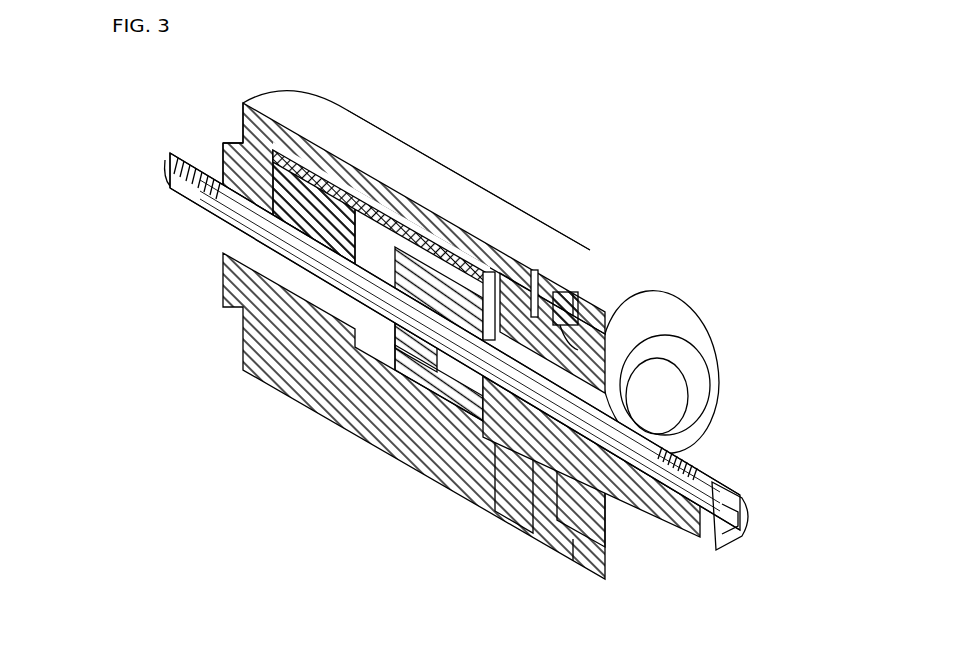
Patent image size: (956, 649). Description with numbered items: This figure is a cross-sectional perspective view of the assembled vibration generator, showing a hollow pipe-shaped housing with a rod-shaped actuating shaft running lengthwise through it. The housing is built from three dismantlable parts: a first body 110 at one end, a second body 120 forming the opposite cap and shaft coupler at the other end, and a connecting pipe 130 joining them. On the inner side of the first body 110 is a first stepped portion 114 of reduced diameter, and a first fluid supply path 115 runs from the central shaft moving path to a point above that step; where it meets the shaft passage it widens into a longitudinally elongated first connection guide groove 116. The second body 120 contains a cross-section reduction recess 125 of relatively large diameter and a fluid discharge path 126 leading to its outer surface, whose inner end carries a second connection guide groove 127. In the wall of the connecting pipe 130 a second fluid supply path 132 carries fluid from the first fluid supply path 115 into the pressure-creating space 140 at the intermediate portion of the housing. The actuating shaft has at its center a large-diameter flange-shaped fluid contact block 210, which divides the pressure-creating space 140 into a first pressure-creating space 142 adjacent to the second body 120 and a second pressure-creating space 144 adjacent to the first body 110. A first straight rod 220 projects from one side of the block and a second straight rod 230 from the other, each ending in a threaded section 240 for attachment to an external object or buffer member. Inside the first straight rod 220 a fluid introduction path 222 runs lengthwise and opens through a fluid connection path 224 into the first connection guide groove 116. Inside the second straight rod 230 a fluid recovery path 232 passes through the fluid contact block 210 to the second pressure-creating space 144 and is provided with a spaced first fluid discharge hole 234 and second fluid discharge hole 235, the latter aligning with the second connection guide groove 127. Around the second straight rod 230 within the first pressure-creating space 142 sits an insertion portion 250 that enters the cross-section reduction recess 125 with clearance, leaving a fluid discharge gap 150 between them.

The first body 110 is at (323, 100).
The first stepped portion 114 is at (313, 407).
The first fluid supply path 115 is at (262, 158).
The first connection guide groove 116 is at (228, 183).
The second body 120 is at (628, 288).
The cross-section reduction recess 125 is at (540, 270).
The fluid discharge path 126 is at (568, 285).
The second connection guide groove 127 is at (715, 355).
The connecting pipe 130 is at (505, 225).
The second fluid supply path 132 is at (388, 178).
The pressure-creating space 140 is at (428, 547).
The first pressure-creating space 142 is at (478, 474).
The second pressure-creating space 144 is at (377, 442).
The fluid discharge gap 150 is at (565, 520).
The fluid contact block 210 is at (410, 220).
The first straight rod 220 is at (215, 258).
The fluid introduction path 222 is at (210, 250).
The fluid connection path 224 is at (215, 222).
The second straight rod 230 is at (683, 430).
The fluid recovery path 232 is at (488, 268).
The first fluid discharge hole 234 is at (628, 540).
The second fluid discharge hole 235 is at (632, 510).
The threaded section 240 is at (712, 523).
The insertion portion 250 is at (500, 445).